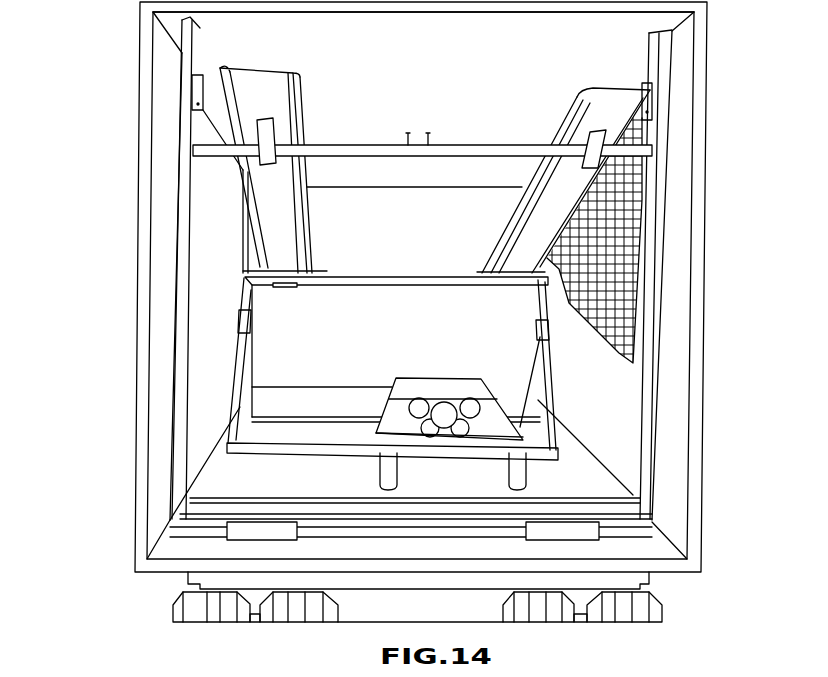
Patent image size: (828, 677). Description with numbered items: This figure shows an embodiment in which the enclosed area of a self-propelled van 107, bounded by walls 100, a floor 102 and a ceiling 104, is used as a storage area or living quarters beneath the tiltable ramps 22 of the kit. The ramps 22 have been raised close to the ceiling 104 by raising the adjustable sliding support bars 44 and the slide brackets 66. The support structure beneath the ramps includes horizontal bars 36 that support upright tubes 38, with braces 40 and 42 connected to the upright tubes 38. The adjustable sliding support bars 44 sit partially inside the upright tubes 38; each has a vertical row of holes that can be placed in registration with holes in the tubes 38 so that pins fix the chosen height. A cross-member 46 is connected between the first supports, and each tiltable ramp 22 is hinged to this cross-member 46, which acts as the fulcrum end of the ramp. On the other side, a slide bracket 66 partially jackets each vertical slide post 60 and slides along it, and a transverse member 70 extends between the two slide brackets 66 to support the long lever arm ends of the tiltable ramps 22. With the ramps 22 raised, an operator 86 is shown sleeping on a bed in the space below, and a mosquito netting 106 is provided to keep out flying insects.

The tiltable ramp 22 is at (297, 93).
The horizontal bar 36 is at (299, 413).
The upright tube 38 is at (548, 405).
The brace 40 is at (532, 380).
The brace 42 is at (240, 406).
The adjustable sliding support bar 44 is at (247, 294).
The cross-member 46 is at (428, 282).
The vertical slide post 60 is at (180, 52).
The slide bracket 66 is at (195, 90).
The transverse member 70 is at (480, 143).
The operator 86 is at (456, 384).
The wall 100 is at (163, 227).
The floor 102 is at (210, 549).
The ceiling 104 is at (265, 33).
The mosquito netting 106 is at (636, 276).
The self-propelled van 107 is at (95, 481).